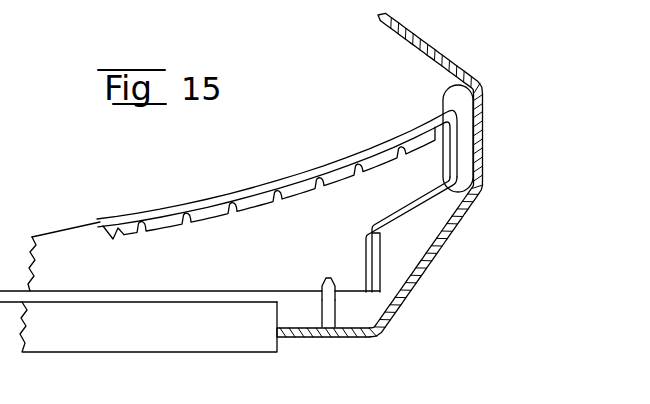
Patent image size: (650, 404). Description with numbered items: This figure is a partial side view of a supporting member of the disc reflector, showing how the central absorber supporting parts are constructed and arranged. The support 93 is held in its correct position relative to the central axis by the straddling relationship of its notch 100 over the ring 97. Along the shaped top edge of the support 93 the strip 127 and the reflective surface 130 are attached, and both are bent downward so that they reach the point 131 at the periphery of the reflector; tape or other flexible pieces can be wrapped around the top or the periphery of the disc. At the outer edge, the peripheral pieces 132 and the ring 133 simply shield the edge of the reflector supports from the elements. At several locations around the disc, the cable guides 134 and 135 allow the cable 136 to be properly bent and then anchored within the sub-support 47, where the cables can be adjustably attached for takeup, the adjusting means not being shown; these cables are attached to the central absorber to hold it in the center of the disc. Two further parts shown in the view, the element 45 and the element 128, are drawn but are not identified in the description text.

The support slab 45 is at (151, 298).
The sub-support 47 is at (216, 330).
The support 93 is at (60, 258).
The ring 97 is at (325, 307).
The notch 100 is at (331, 279).
The strip 127 is at (117, 232).
The ratchet teeth 128 is at (229, 213).
The reflective surface 130 is at (157, 210).
The point 131 is at (455, 158).
The peripheral pieces 132 is at (395, 213).
The ring 133 is at (376, 253).
The cable guide 134 is at (466, 118).
The cable guide 135 is at (353, 312).
The cable 136 is at (413, 36).